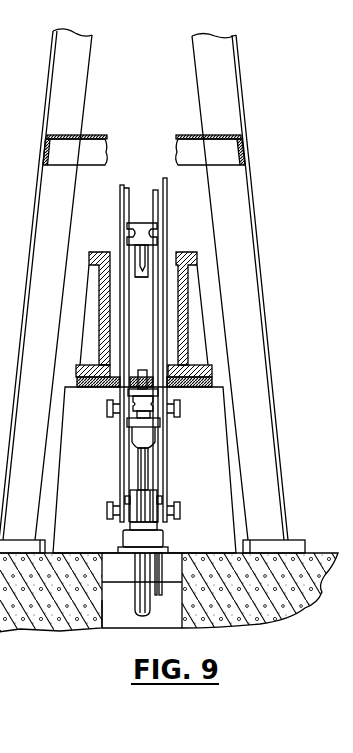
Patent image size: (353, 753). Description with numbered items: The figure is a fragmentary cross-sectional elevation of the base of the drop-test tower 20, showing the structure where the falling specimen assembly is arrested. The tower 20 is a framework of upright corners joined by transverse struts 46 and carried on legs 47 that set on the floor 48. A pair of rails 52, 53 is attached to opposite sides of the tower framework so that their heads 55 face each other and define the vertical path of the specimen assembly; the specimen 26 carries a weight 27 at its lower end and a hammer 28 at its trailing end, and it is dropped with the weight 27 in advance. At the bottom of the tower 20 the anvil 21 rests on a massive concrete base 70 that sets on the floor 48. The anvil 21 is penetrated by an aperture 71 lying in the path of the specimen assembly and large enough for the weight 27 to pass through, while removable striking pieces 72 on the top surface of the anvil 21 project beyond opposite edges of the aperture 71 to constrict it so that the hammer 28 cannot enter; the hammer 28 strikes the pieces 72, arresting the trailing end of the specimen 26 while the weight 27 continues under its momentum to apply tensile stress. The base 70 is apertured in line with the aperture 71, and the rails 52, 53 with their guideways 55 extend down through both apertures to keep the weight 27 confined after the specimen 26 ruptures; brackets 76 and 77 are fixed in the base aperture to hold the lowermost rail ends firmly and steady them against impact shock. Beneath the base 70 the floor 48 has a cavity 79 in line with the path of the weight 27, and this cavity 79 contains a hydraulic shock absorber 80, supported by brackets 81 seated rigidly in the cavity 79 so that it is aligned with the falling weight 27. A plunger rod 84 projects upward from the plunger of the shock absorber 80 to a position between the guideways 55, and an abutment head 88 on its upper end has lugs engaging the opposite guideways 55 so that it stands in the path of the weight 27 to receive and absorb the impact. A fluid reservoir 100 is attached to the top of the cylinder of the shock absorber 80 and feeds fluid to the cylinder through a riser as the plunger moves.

The tower 20 is at (243, 70).
The anvil 21 is at (200, 355).
The specimen 26 is at (144, 259).
The weight 27 is at (143, 404).
The hammer 28 is at (148, 229).
The transverse struts 46 is at (187, 138).
The legs 47 is at (241, 212).
The floor 48 is at (322, 551).
The rail 52 is at (125, 214).
The rail 53 is at (166, 209).
The heads 55 is at (150, 328).
The base 70 is at (210, 431).
The aperture 71 is at (172, 294).
The striking pieces 72 is at (142, 277).
The bracket 76 is at (113, 418).
The bracket 77 is at (110, 504).
The cavity 79 is at (110, 612).
The shock absorber 80 is at (131, 619).
The brackets 81 is at (172, 562).
The plunger rod 84 is at (143, 463).
The abutment head 88 is at (149, 436).
The fluid reservoir 100 is at (165, 541).